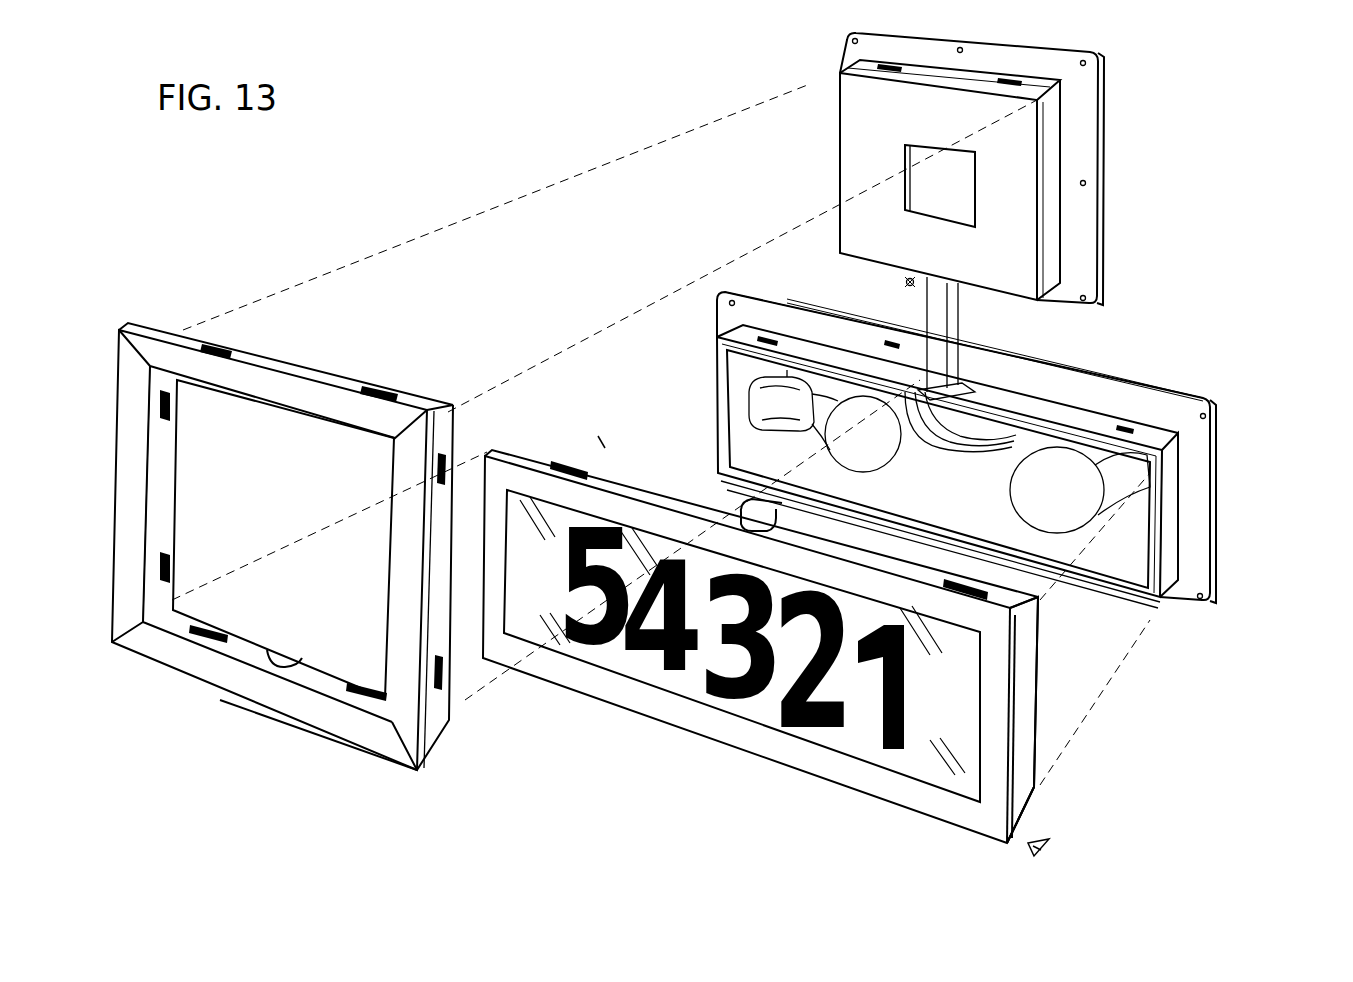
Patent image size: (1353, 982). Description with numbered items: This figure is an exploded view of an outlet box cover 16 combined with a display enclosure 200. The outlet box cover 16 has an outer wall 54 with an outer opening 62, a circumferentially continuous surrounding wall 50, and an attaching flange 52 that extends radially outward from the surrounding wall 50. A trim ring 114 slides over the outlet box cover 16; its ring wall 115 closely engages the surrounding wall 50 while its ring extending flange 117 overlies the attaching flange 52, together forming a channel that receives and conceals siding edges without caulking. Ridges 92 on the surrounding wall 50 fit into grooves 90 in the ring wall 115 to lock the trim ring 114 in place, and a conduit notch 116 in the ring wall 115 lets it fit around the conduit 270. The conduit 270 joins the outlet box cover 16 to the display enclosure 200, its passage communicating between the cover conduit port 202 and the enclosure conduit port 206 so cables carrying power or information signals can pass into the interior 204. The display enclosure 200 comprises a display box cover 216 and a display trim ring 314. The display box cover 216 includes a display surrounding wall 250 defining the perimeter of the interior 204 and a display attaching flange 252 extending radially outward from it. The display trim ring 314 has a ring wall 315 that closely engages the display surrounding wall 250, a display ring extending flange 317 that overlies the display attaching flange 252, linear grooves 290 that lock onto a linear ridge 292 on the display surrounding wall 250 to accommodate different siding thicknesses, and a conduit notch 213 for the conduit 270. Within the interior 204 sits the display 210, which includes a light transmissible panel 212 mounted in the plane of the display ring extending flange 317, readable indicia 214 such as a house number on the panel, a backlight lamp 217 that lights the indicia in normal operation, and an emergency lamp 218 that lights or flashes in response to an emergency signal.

The outlet box cover 16 is at (1104, 42).
The ridges 92 is at (1008, 78).
The outer wall 54 is at (862, 105).
The outer opening 62 is at (935, 155).
The surrounding wall 50 is at (1055, 150).
The attaching flange 52 is at (1085, 235).
The cover conduit port 202 is at (904, 282).
The conduit 270 is at (960, 318).
The display box cover 216 is at (1218, 382).
The linear ridge 292 is at (1120, 424).
The enclosure conduit port 206 is at (1045, 408).
The emergency lamp 218 is at (820, 415).
The backlight lamp 217 is at (1030, 490).
The display surrounding wall 250 is at (1170, 495).
The display attaching flange 252 is at (1195, 545).
The interior 204 is at (1132, 606).
The display 210 is at (660, 385).
The conduit notch 213 is at (776, 514).
The linear grooves 290 is at (600, 440).
The light transmissible panel 212 is at (690, 690).
The readable indicia 214 is at (785, 695).
The ring wall 315 is at (1027, 663).
The display ring extending flange 317 is at (993, 757).
The display trim ring 314 is at (1043, 853).
The display enclosure 200 is at (1206, 697).
The trim ring 114 is at (128, 312).
The grooves 90 is at (378, 392).
The ring wall 115 is at (160, 488).
The conduit notch 116 is at (285, 652).
The ring extending flange 117 is at (377, 743).